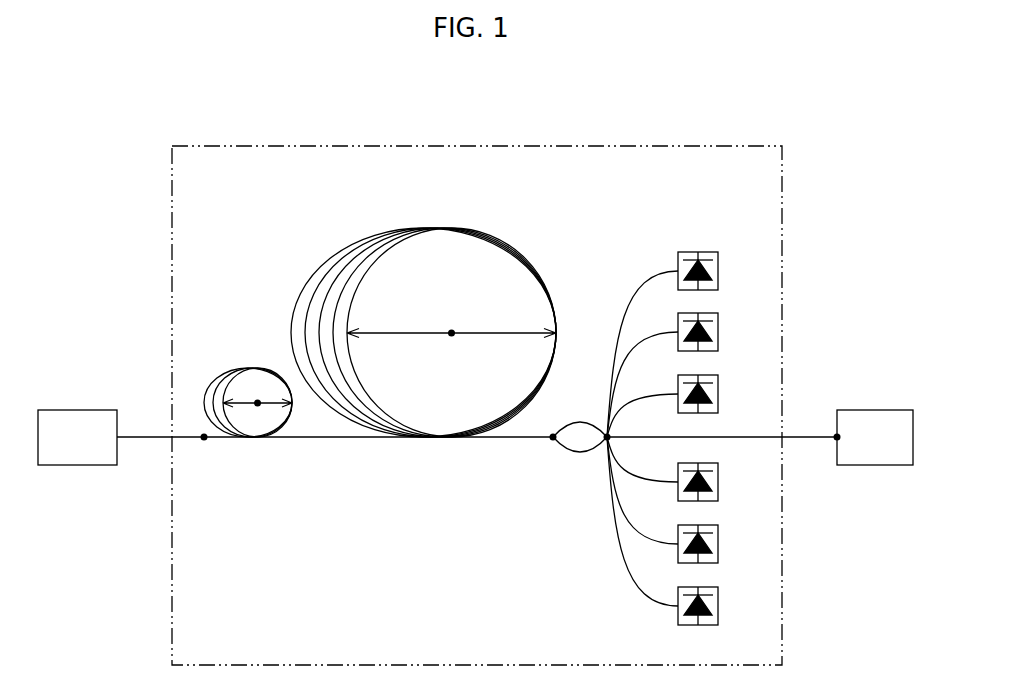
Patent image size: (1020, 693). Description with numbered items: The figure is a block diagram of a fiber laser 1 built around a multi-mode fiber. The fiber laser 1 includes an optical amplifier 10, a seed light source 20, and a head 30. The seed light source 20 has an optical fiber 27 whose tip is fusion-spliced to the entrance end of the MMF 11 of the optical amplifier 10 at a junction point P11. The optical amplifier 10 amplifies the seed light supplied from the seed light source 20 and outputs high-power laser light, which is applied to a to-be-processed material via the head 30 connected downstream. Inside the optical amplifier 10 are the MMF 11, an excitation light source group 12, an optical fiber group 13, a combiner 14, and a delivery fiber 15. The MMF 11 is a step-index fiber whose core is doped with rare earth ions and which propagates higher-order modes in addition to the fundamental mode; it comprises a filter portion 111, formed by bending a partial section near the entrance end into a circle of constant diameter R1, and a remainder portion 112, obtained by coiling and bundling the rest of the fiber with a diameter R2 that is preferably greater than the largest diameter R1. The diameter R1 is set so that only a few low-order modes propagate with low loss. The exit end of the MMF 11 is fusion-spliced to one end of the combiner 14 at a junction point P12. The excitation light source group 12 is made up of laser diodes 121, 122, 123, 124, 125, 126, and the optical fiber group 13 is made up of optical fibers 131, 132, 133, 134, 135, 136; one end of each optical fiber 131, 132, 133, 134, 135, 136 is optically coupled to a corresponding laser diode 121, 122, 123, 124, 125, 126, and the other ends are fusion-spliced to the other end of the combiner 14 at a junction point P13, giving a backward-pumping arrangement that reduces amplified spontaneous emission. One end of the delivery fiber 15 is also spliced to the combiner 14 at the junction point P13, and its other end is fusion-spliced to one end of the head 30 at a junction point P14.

The fiber laser 1 is at (844, 116).
The optical amplifier 10 is at (478, 145).
The MMF 11 is at (504, 203).
The filter portion 111 is at (248, 368).
The remainder portion 112 is at (423, 229).
The diameter of filter portion R1 is at (257, 393).
The diameter of remainder portion R2 is at (451, 323).
The excitation light source group 12 is at (705, 203).
The laser diode 121 is at (718, 266).
The laser diode 122 is at (718, 327).
The laser diode 123 is at (718, 389).
The laser diode 124 is at (718, 493).
The laser diode 125 is at (718, 555).
The laser diode 126 is at (718, 618).
The optical fiber group 13 is at (648, 203).
The optical fiber 131 is at (662, 270).
The optical fiber 132 is at (662, 332).
The optical fiber 133 is at (662, 394).
The optical fiber 134 is at (662, 483).
The optical fiber 135 is at (662, 545).
The optical fiber 136 is at (662, 607).
The combiner 14 is at (580, 422).
The delivery fiber 15 is at (810, 437).
The seed light source 20 is at (78, 410).
The optical fiber 27 is at (145, 437).
The head 30 is at (876, 410).
The junction point P11 is at (204, 440).
The junction point P12 is at (553, 440).
The junction point P13 is at (607, 440).
The junction point P14 is at (837, 440).